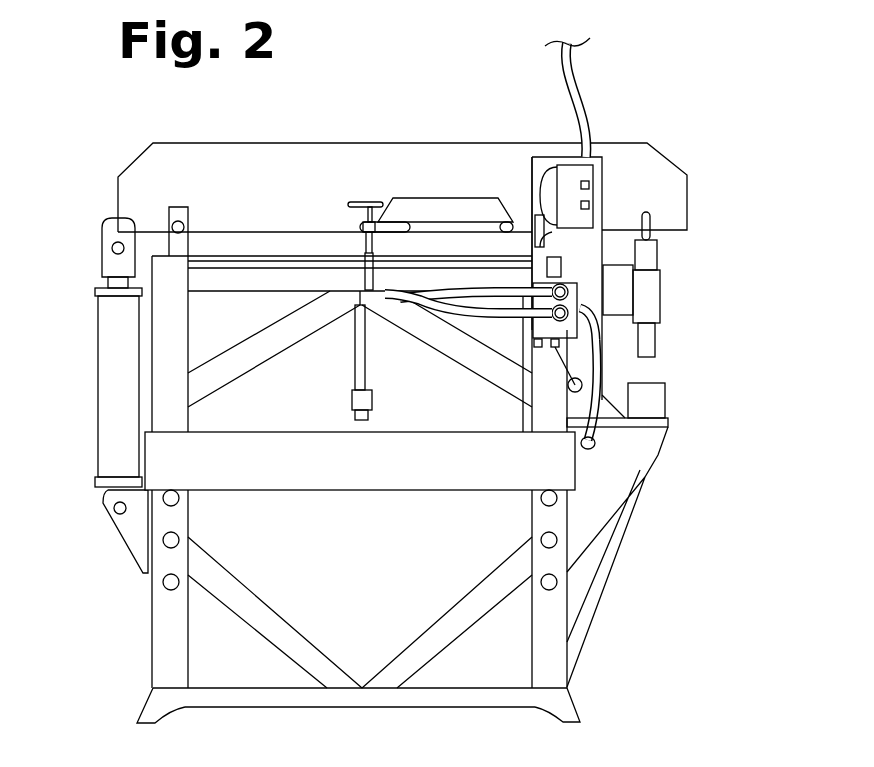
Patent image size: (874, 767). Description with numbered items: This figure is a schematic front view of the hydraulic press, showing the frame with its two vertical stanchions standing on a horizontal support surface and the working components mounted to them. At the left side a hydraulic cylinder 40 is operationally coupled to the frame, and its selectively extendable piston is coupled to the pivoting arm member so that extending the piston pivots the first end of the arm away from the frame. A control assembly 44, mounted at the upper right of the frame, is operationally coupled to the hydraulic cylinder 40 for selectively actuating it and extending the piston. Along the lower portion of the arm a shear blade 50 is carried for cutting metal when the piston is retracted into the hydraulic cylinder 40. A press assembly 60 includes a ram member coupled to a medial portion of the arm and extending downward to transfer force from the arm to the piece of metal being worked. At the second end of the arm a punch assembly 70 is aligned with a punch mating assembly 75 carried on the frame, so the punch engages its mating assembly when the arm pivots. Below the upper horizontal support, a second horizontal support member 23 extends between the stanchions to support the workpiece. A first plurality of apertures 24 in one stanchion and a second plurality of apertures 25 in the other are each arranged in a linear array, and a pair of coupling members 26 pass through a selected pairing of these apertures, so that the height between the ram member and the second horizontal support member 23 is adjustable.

The second horizontal support member 23 is at (372, 490).
The first plurality of apertures 24 is at (165, 545).
The second plurality of apertures 25 is at (555, 545).
The coupling members 26 is at (165, 503).
The hydraulic cylinder 40 is at (105, 381).
The control assembly 44 is at (563, 272).
The shear blade 50 is at (442, 225).
The press assembly 60 is at (362, 368).
The punch assembly 70 is at (650, 342).
The punch mating assembly 75 is at (657, 400).